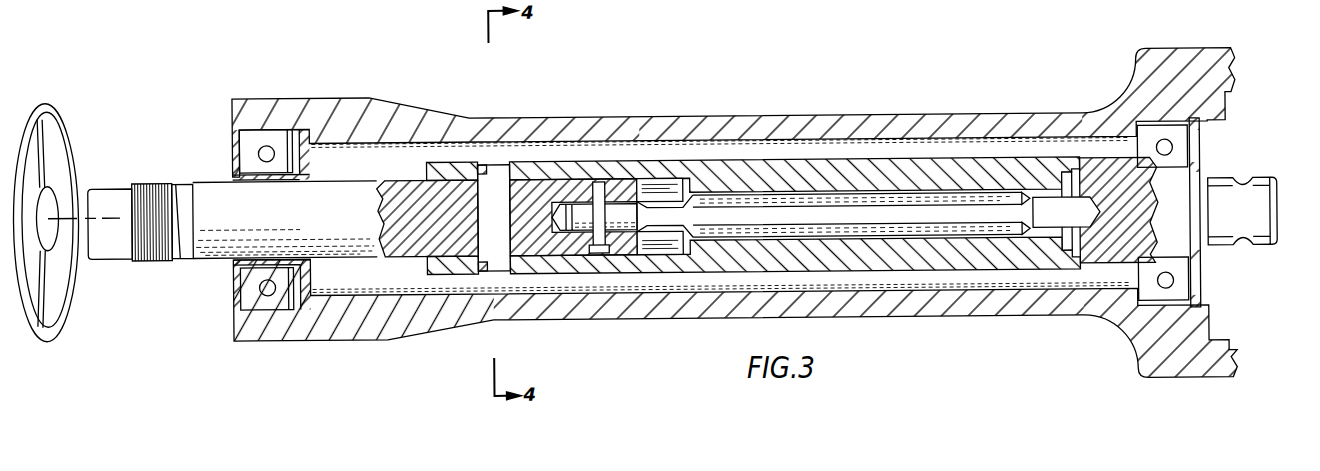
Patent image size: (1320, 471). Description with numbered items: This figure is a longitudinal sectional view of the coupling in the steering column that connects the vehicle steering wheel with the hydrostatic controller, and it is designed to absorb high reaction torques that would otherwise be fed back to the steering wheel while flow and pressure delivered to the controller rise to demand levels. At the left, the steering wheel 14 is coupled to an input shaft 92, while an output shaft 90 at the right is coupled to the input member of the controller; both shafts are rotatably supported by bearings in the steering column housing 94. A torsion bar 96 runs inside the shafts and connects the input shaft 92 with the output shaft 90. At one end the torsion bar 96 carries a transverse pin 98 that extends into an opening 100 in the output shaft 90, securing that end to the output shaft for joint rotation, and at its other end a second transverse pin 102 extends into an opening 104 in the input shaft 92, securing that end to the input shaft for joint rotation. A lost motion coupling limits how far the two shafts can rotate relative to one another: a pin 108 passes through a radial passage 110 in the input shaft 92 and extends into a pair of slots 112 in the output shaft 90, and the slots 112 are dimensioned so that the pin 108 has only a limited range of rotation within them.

The steering wheel 14 is at (60, 326).
The output shaft 90 is at (922, 172).
The input shaft 92 is at (207, 207).
The steering column housing 94 is at (406, 116).
The torsion bar 96 is at (805, 218).
The transverse pin 98 is at (1077, 188).
The opening 100 is at (1064, 156).
The transverse pin 102 is at (592, 222).
The opening 104 is at (604, 254).
The pin 108 is at (537, 188).
The radial passage 110 is at (505, 206).
The slots 112 is at (481, 170).